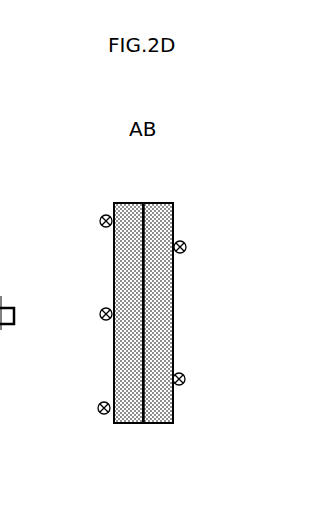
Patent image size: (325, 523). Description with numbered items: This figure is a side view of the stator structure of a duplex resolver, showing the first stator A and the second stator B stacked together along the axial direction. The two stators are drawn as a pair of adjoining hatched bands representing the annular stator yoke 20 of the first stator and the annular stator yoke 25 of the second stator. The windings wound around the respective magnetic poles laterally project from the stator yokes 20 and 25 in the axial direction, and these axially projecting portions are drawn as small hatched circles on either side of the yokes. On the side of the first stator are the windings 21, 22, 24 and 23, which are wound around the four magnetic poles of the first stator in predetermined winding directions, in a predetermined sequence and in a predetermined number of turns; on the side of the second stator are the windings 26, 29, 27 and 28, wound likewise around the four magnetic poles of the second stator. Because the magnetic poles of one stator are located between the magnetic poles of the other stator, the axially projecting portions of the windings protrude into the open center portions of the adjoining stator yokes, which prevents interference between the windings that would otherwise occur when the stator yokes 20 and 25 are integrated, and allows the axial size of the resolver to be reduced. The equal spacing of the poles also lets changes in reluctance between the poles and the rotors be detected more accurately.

The annular stator yoke 20 is at (104, 287).
The winding 21 is at (77, 202).
The winding 22 is at (61, 291).
The winding 23 is at (72, 382).
The winding 24 is at (106, 314).
The annular stator yoke 25 is at (184, 289).
The winding 26 is at (237, 227).
The winding 27 is at (234, 355).
The winding 28 is at (179, 379).
The winding 29 is at (180, 247).